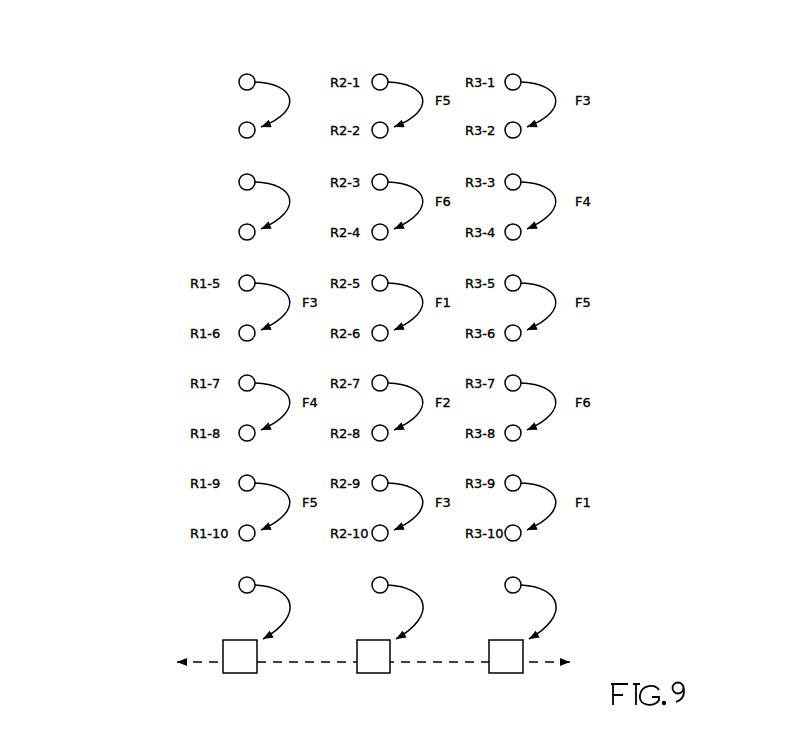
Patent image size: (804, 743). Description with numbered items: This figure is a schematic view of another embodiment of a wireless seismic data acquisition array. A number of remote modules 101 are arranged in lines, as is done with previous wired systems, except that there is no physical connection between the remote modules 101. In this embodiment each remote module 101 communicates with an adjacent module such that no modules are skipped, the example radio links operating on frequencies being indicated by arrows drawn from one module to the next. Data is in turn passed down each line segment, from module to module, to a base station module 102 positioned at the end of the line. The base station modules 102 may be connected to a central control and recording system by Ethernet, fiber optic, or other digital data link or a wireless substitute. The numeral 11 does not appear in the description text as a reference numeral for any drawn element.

The remote module 101 is at (171, 218).
The base station module 102 is at (523, 718).
The eleventh receiver row 11 is at (390, 608).